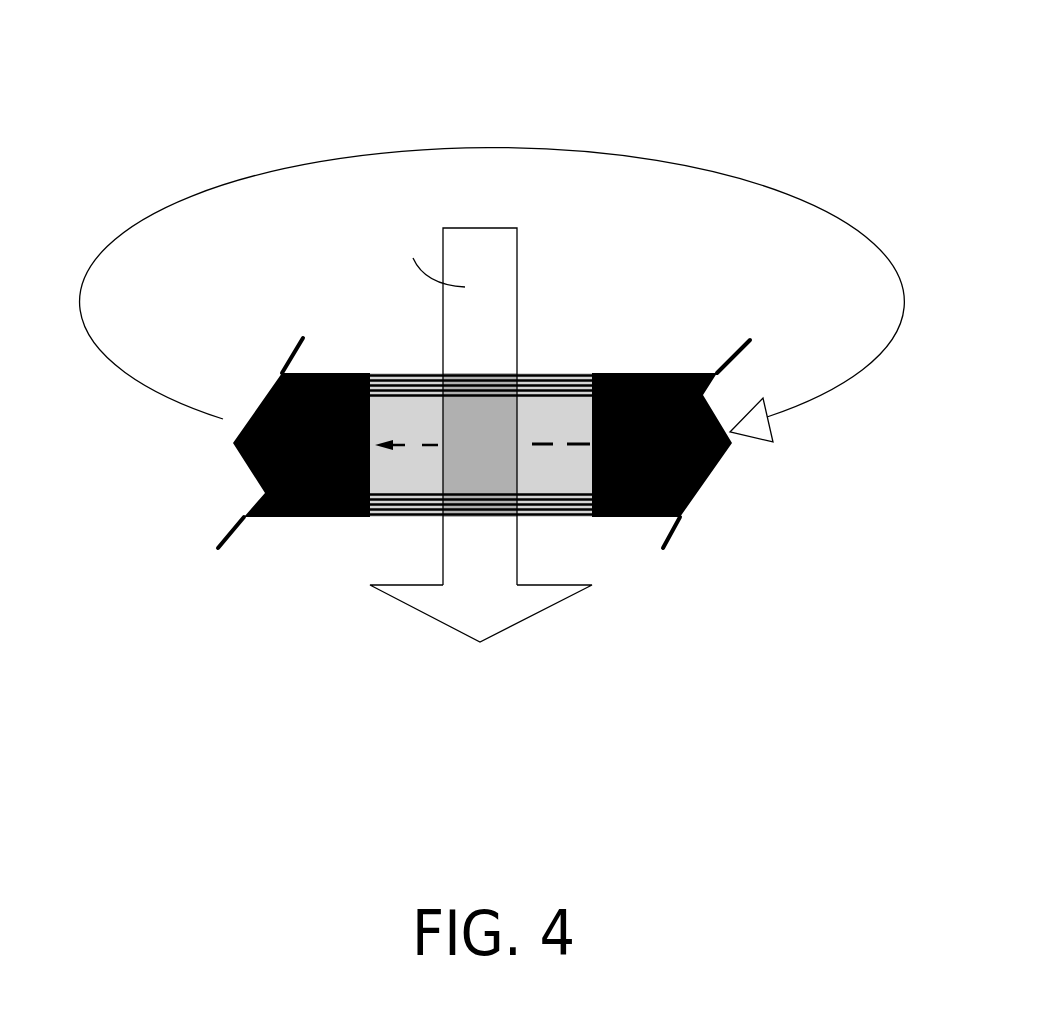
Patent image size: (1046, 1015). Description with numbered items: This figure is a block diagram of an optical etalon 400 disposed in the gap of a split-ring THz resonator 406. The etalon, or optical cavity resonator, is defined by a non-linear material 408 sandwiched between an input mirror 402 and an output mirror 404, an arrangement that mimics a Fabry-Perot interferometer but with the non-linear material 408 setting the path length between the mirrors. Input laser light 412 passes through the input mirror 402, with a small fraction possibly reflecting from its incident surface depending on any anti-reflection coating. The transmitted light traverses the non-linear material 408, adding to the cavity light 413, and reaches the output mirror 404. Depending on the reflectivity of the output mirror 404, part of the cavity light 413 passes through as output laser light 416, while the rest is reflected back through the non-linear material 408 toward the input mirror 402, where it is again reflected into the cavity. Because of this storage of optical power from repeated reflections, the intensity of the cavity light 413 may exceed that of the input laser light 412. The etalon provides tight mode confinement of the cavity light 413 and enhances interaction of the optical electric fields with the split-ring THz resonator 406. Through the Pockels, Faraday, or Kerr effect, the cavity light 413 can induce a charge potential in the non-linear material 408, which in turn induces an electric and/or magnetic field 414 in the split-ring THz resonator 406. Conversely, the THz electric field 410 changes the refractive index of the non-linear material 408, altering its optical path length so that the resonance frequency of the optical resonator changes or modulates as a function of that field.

The optical etalon 400 is at (492, 366).
The input mirror 402 is at (407, 372).
The output mirror 404 is at (410, 517).
The split-ring THz resonator 406 is at (630, 372).
The non-linear material 408 is at (578, 433).
The THz electric field 410 is at (428, 448).
The input laser light 412 is at (518, 273).
The cavity light 413 is at (497, 463).
The electric and/or magnetic field 414 is at (880, 357).
The output laser light 416 is at (417, 612).